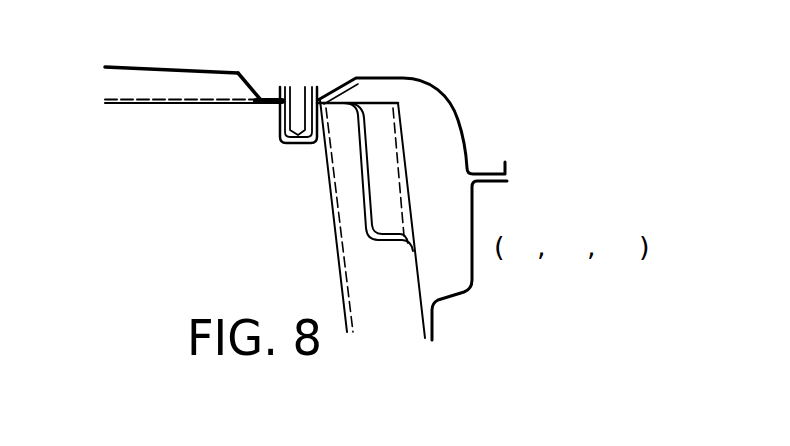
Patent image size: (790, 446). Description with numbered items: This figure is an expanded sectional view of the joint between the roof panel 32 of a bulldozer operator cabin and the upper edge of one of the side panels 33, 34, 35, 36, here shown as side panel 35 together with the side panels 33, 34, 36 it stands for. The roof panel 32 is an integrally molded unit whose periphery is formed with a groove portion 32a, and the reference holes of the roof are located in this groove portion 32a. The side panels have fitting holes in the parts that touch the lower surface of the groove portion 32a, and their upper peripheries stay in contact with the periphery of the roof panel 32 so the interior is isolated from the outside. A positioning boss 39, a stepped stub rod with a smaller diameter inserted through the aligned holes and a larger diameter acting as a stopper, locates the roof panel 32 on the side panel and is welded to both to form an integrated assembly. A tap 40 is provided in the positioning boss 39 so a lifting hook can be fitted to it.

The roof panel 32 is at (177, 66).
The groove portion 32a is at (259, 84).
The tap 40 is at (300, 91).
The positioning boss 39 is at (290, 136).
The side panel 35 is at (475, 223).
The side panel 33 is at (428, 216).
The side panel 34 is at (463, 182).
The side panel 36 is at (514, 220).